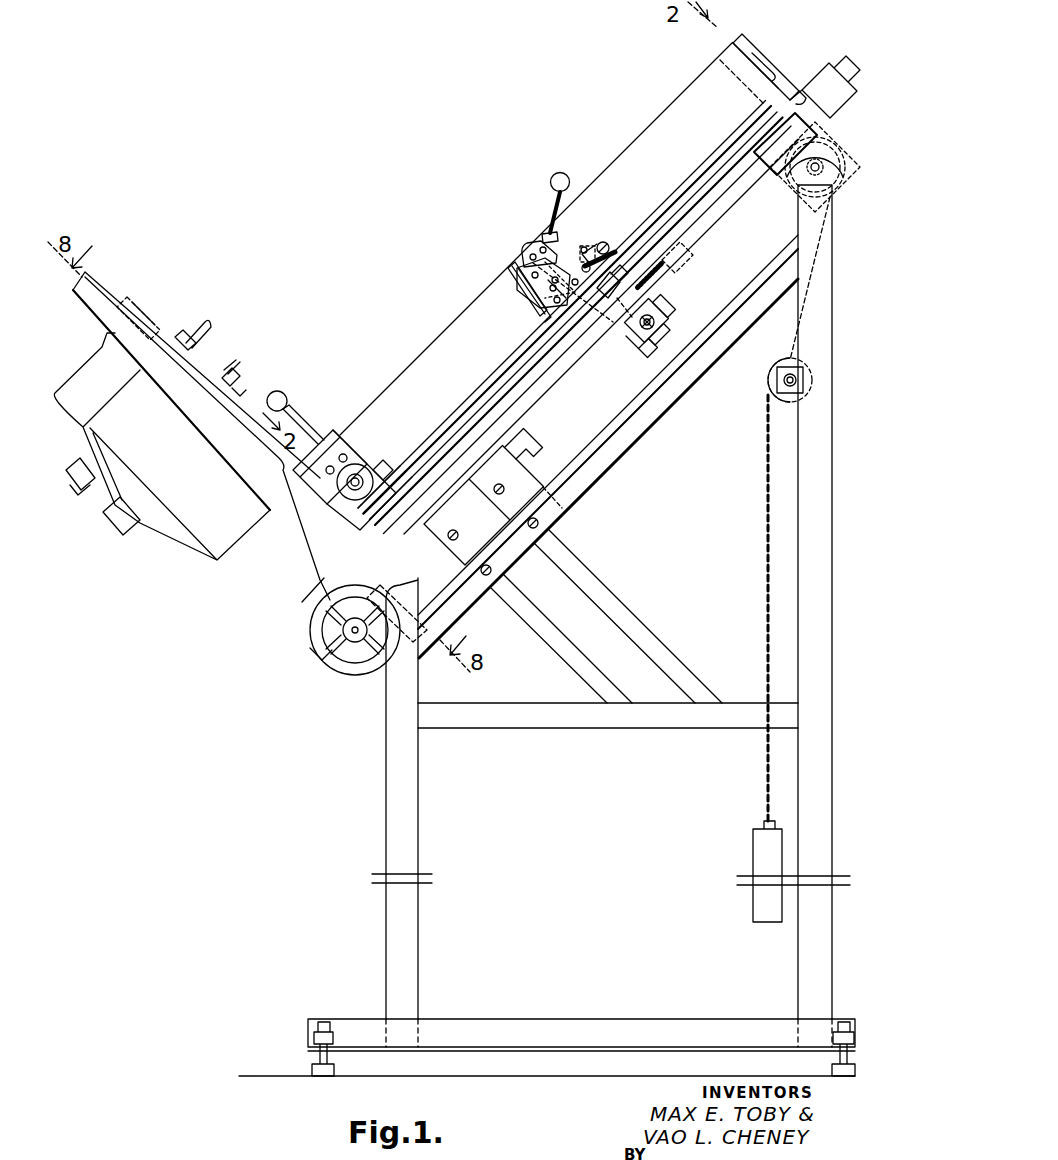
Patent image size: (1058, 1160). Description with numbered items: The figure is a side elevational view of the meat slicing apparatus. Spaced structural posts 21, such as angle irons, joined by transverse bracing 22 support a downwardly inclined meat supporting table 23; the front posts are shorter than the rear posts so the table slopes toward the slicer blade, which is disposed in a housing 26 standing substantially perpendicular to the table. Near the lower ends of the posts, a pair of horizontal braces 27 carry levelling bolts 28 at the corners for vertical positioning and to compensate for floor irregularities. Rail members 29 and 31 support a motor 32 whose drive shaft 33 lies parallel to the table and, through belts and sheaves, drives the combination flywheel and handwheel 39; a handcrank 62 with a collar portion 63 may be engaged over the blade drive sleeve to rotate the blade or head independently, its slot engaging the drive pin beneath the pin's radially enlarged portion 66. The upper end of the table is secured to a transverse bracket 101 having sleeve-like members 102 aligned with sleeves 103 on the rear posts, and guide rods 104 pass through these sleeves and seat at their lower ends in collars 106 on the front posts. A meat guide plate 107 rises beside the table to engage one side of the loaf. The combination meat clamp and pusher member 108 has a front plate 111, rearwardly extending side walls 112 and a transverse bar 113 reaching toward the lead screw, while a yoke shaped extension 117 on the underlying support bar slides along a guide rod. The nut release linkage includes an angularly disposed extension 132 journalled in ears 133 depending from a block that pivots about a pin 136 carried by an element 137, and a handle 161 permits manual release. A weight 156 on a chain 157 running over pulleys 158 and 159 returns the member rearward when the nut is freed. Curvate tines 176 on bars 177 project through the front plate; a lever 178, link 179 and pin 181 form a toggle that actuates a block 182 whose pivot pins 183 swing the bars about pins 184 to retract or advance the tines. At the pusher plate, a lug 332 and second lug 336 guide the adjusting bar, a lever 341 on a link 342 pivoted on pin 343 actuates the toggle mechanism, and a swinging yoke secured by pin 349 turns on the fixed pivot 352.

The structural posts 21 is at (412, 817).
The transverse bracing 22 is at (655, 725).
The meat supporting table 23 is at (482, 380).
The housing 26 is at (166, 540).
The horizontally extending braces 27 is at (636, 1027).
The levelling bolts 28 is at (316, 1054).
The rail member 29 is at (588, 485).
The rail member 31 is at (612, 598).
The motor 32 is at (528, 480).
The drive shaft 33 is at (470, 608).
The combination flywheel and handwheel 39 is at (200, 370).
The handcrank 62 is at (205, 342).
The collar portion 63 is at (282, 393).
The radially enlarged portion 66 is at (233, 380).
The transverse bracket 101 is at (768, 62).
The sleeve-like members 102 is at (828, 78).
The sleeves 103 is at (767, 150).
The guide rods 104 is at (557, 392).
The collars 106 is at (376, 580).
The meat guide plate 107 is at (640, 150).
The combination meat clamp and pusher member 108 is at (512, 193).
The front plate 111 is at (516, 290).
The side walls 112 is at (538, 312).
The transverse bar 113 is at (612, 252).
The yoke shaped extension 117 is at (605, 300).
The angularly disposed extension 132 is at (664, 333).
The ears 133 is at (645, 348).
The pin 136 is at (662, 312).
The element 137 is at (665, 292).
The weight 156 is at (760, 858).
The chain 157 is at (766, 542).
The pulley 158 is at (832, 182).
The pulley 159 is at (778, 405).
The handle 161 is at (646, 345).
The curvate tines 176 is at (512, 278).
The bar 177 is at (528, 270).
The manually engageable lever 178 is at (548, 210).
The link 179 is at (600, 242).
The pin 181 is at (556, 291).
The block 182 is at (536, 252).
The pivot pins 183 is at (550, 275).
The pins 184 is at (547, 282).
The angularly extending lug 332 is at (368, 460).
The second lug 336 is at (360, 436).
The lever 341 is at (292, 404).
The link 342 is at (325, 440).
The pin 343 is at (345, 450).
The pin 349 is at (365, 448).
The fixed pivot 352 is at (372, 462).